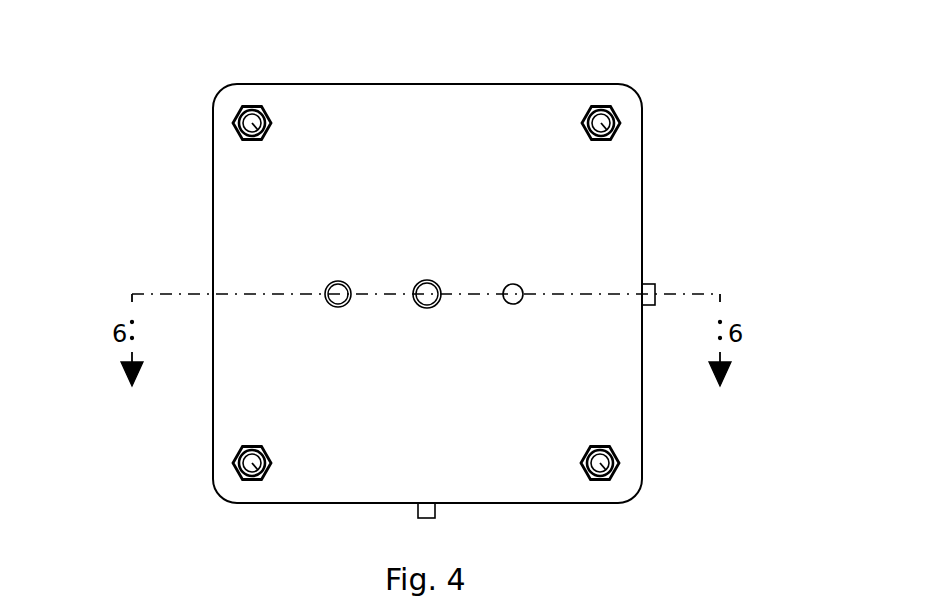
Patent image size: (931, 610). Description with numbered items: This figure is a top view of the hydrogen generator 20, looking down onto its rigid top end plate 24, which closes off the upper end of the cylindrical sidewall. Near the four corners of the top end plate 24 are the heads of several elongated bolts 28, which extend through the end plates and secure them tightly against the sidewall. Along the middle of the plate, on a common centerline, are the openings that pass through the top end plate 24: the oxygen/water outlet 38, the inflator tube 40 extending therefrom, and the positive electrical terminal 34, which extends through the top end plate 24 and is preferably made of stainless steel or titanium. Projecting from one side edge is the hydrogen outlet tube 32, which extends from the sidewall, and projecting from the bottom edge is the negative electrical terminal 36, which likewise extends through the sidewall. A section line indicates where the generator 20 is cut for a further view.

The hydrogen generator 20 is at (160, 134).
The top end plate 24 is at (642, 145).
The elongated bolts 28 is at (247, 142).
The hydrogen outlet tube 32 is at (648, 284).
The positive electrical terminal 34 is at (513, 305).
The negative electrical terminal 36 is at (436, 509).
The oxygen/water outlet 38 is at (330, 282).
The inflator tube 40 is at (432, 282).